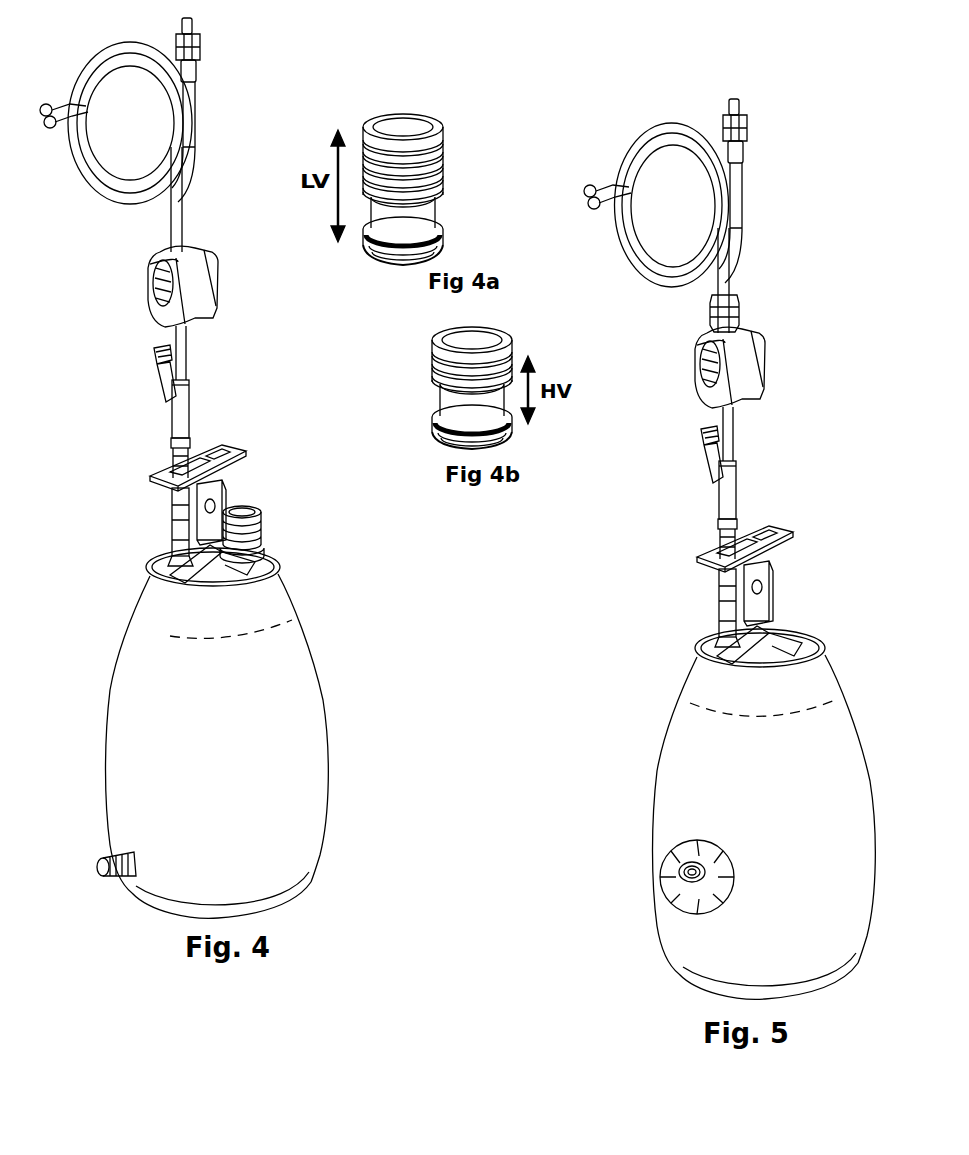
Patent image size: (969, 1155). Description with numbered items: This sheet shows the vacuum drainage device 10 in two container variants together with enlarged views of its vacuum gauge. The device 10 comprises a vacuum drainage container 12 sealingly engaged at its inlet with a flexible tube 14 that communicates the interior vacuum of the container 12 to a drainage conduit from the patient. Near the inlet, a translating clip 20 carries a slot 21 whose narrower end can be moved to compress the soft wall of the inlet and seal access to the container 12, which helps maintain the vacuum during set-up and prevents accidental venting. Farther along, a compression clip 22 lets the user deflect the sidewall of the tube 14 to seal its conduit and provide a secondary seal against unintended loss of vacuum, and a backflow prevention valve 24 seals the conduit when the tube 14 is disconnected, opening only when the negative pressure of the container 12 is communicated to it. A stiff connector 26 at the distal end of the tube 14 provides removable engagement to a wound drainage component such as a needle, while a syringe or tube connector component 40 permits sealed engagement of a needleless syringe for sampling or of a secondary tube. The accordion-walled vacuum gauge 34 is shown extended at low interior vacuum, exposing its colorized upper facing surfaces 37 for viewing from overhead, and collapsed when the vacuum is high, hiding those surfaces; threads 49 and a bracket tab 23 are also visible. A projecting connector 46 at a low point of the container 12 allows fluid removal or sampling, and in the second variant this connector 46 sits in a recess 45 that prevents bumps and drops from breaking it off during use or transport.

In FIG. 4, the device 10 is at (288, 412).
In FIG. 5, the device 10 is at (596, 626).
In FIG. 4, the vacuum drainage container 12 is at (306, 678).
In FIG. 5, the vacuum drainage container 12 is at (727, 814).
In FIG. 4, the tube 14 is at (183, 220).
In FIG. 5, the tube 14 is at (665, 373).
In FIG. 4, the clip 20 is at (148, 477).
In FIG. 5, the slot 21 is at (749, 566).
In FIG. 4, the compression clip 22 is at (204, 288).
In FIG. 5, the compression clip 22 is at (693, 354).
In FIG. 4, the bracket tab 23 is at (225, 440).
In FIG. 5, the backflow prevention valve 24 is at (759, 294).
In FIG. 4, the connector 26 is at (197, 68).
In FIG. 4, the vacuum gauge 34 is at (259, 516).
In FIG. 4A, the vacuum gauge 34 is at (427, 173).
In FIG. 4B, the vacuum gauge 34 is at (432, 340).
In FIG. 4A, the upper facing surfaces 37 is at (447, 137).
In FIG. 4, the syringe or tube connector component 40 is at (154, 376).
In FIG. 5, the syringe or tube connector component 40 is at (661, 453).
In FIG. 5, the recess 45 is at (657, 877).
In FIG. 4, the projecting connector 46 is at (118, 882).
In FIG. 5, the projecting connector 46 is at (633, 839).
In FIG. 4A, the threads 49 is at (446, 186).